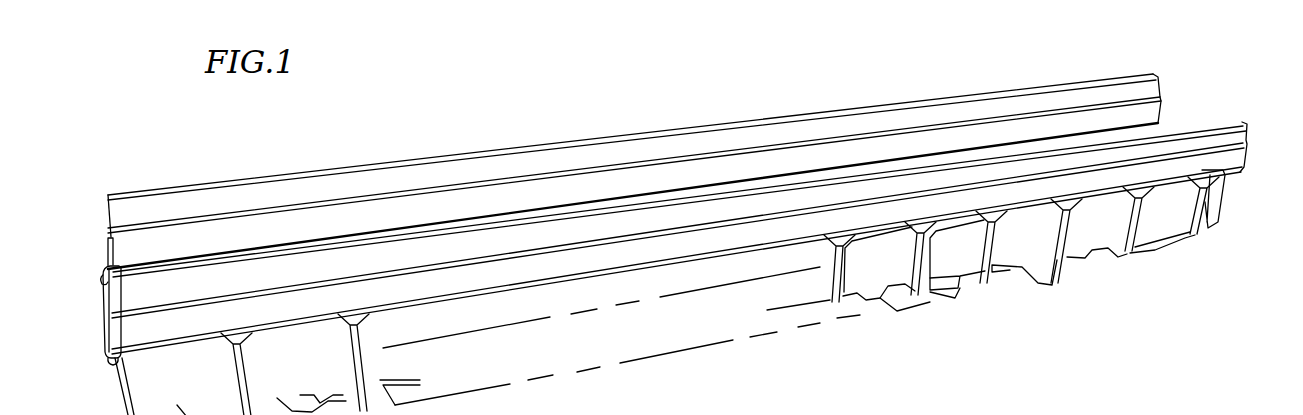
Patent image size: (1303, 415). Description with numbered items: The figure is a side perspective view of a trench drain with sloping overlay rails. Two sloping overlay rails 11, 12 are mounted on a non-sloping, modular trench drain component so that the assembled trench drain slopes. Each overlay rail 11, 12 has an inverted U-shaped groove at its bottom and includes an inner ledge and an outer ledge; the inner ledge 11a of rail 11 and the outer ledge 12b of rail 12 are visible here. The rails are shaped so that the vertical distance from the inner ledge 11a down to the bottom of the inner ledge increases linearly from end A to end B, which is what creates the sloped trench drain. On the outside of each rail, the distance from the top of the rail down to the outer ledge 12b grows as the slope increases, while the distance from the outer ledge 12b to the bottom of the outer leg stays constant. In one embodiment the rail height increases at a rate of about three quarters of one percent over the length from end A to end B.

The sloping overlay rail 11 is at (1068, 84).
The inner ledge 11a is at (978, 120).
The sloping overlay rail 12 is at (1183, 128).
The outer ledge 12b is at (1143, 156).
The end A is at (1245, 156).
The end B is at (107, 318).